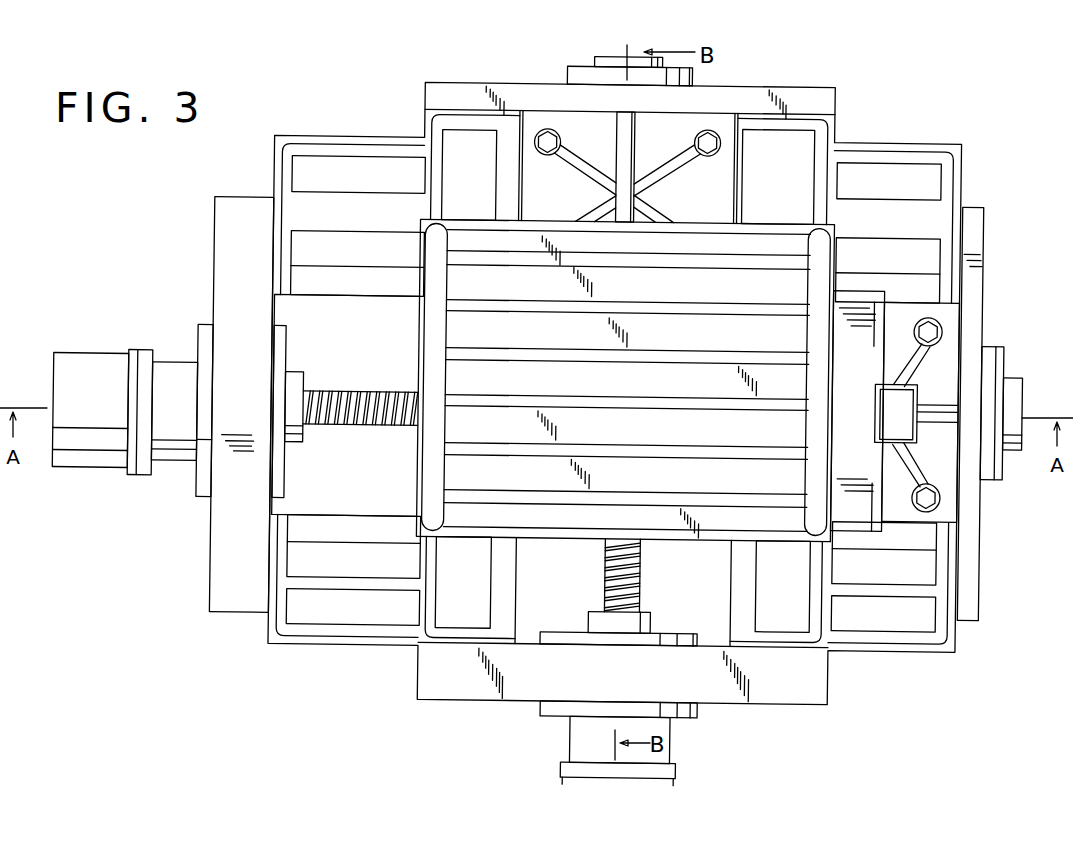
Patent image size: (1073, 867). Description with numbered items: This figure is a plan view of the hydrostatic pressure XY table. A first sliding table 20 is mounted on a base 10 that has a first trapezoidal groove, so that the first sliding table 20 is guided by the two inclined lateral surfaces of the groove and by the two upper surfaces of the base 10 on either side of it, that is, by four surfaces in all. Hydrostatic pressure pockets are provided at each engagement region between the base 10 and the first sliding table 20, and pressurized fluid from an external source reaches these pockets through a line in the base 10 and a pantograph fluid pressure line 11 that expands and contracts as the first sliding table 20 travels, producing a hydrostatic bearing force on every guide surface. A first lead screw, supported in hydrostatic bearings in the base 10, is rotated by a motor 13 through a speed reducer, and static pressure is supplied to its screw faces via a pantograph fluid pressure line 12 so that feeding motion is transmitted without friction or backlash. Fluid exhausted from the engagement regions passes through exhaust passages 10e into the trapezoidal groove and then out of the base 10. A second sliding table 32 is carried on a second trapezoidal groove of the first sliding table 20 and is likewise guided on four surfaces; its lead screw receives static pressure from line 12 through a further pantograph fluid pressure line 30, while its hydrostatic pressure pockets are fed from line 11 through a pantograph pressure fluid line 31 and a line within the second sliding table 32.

The base 10 is at (330, 622).
The exhaust passage 10e is at (283, 635).
The pantograph fluid pressure line 11 is at (926, 343).
The pantograph fluid pressure line 12 is at (923, 469).
The motor 13 is at (102, 472).
The first sliding table 20 is at (456, 620).
The pantograph fluid pressure line 30 is at (582, 163).
The pantograph pressure fluid line 31 is at (673, 162).
The second sliding table 32 is at (773, 240).